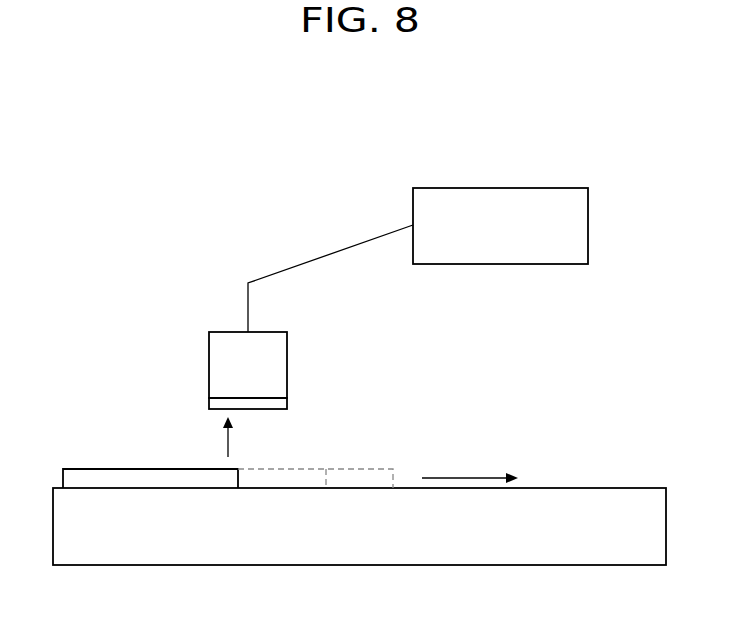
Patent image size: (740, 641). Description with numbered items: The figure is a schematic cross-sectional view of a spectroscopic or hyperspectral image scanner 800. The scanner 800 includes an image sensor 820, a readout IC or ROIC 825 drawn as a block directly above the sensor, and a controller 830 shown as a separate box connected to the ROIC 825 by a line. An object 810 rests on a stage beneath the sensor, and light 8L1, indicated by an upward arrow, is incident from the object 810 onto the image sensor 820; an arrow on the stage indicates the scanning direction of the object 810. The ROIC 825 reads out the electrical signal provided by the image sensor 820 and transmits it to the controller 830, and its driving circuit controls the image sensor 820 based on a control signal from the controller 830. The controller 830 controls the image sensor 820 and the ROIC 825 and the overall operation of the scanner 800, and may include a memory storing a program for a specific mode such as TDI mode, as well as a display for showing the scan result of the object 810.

The hyperspectral image scanner 800 is at (214, 196).
The object 810 is at (123, 475).
The image sensor 820 is at (287, 405).
The readout IC (ROIC) 825 is at (287, 365).
The controller 830 is at (502, 188).
The light 8L1 is at (228, 445).